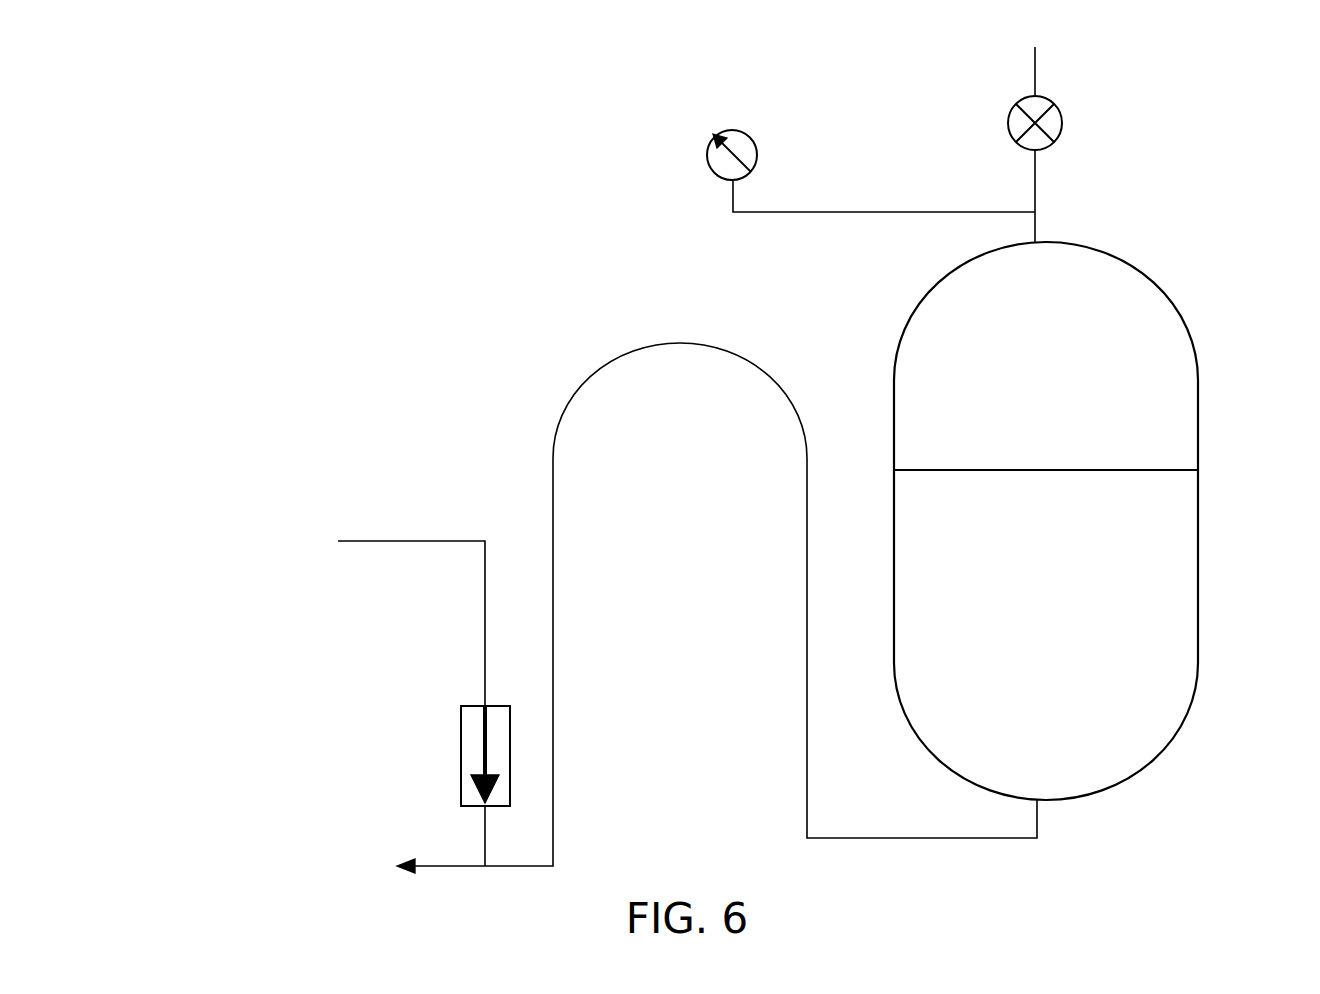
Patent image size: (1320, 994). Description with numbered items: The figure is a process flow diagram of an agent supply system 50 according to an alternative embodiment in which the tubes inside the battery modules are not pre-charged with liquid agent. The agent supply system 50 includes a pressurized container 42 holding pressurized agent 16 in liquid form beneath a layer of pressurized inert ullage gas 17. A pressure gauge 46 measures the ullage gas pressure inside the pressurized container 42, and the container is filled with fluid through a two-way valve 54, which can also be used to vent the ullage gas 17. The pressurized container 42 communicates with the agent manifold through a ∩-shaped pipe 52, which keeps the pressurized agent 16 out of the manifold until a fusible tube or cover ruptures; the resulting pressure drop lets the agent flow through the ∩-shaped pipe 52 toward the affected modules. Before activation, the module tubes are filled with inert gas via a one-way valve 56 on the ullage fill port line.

The pressurized agent 16 is at (905, 582).
The pressurized inert ullage gas 17 is at (902, 426).
The pressurized container 42 is at (1045, 521).
The pressure gauge 46 is at (752, 137).
The agent supply system 50 is at (668, 238).
The ∩-shaped pipe 52 is at (743, 357).
The two-way valve 54 is at (1064, 118).
The one-way valve 56 is at (461, 752).